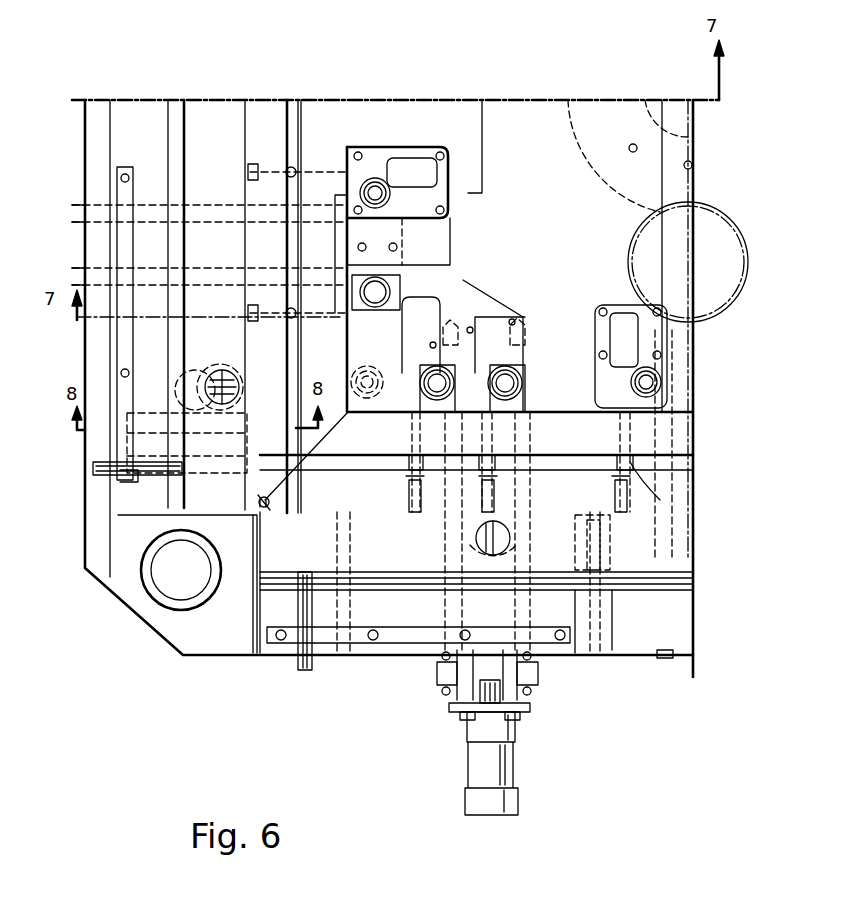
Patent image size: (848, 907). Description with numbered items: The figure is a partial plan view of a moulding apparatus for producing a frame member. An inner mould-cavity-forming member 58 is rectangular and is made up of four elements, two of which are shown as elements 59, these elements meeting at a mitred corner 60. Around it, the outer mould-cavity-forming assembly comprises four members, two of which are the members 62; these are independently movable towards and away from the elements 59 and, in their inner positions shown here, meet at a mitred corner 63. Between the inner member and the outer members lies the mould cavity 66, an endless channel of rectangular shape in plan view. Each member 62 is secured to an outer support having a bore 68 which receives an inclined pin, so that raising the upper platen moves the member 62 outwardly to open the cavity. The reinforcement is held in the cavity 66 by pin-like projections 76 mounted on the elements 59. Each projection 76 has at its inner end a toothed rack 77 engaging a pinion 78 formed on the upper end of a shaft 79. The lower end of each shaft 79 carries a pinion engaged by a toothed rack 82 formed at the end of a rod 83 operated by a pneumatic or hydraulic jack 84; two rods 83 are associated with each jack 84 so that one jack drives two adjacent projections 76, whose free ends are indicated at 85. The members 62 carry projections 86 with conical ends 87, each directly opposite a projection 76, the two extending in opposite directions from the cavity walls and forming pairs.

The inner mould-cavity-forming member 58 is at (686, 420).
The elements of inner member 59 is at (335, 105).
The mitred corner 60 is at (330, 440).
The outer mould-cavity-forming members 62 is at (258, 108).
The mitred corner 63 is at (268, 508).
The mould cavity 66 is at (562, 465).
The bore 68 is at (222, 370).
The projections 76 is at (302, 168).
The toothed rack 77 is at (398, 388).
The pinion 78 is at (420, 327).
The shaft 79 is at (437, 378).
The toothed rack 82 is at (456, 330).
The rod 83 is at (445, 612).
The pneumatic or hydraulic jack 84 is at (505, 770).
The free end of projection 85 is at (640, 455).
The projections 86 is at (270, 168).
The conical ends 87 is at (628, 465).